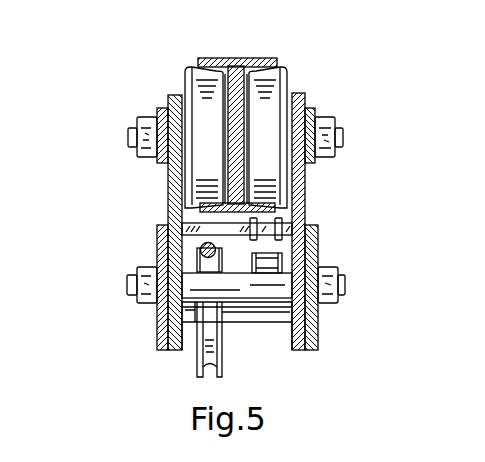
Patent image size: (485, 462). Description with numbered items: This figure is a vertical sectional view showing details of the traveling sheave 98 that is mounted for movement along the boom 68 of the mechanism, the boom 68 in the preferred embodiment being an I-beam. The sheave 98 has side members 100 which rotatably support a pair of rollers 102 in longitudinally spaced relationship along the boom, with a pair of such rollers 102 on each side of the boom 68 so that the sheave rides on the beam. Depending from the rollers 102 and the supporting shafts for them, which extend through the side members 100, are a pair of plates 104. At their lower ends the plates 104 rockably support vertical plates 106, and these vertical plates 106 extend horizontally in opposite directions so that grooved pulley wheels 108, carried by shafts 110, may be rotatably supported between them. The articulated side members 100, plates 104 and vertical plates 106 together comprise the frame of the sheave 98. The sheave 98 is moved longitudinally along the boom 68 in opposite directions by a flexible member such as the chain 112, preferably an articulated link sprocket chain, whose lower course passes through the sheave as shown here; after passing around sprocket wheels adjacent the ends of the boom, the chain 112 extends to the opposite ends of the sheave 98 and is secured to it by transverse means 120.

The boom 68 is at (228, 57).
The traveling sheave 98 is at (232, 186).
The side members 100 is at (157, 162).
The rollers 102 is at (205, 90).
The plates 104 is at (170, 200).
The vertical plates 106 is at (158, 247).
The grooved pulley wheels 108 is at (207, 352).
The shafts 110 is at (245, 313).
The chain 112 is at (282, 262).
The transverse means 120 is at (280, 225).